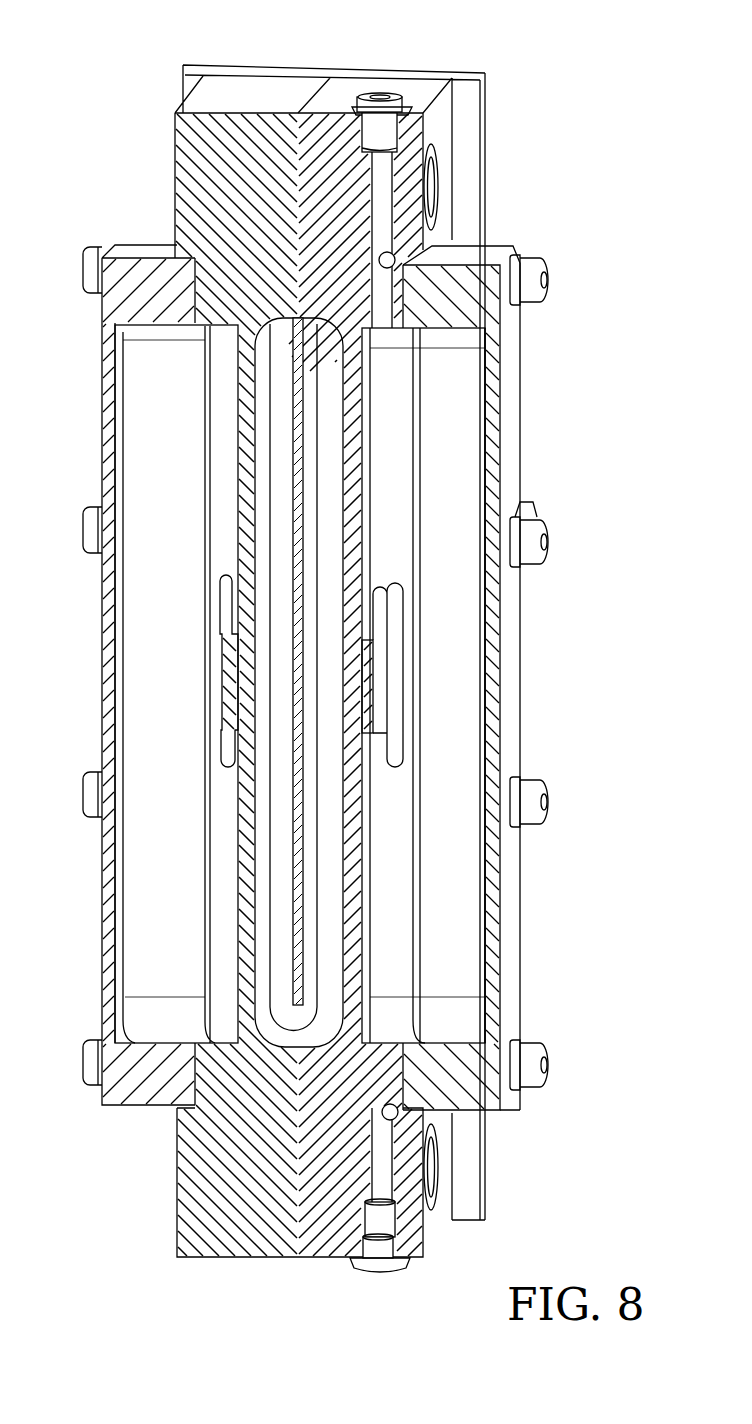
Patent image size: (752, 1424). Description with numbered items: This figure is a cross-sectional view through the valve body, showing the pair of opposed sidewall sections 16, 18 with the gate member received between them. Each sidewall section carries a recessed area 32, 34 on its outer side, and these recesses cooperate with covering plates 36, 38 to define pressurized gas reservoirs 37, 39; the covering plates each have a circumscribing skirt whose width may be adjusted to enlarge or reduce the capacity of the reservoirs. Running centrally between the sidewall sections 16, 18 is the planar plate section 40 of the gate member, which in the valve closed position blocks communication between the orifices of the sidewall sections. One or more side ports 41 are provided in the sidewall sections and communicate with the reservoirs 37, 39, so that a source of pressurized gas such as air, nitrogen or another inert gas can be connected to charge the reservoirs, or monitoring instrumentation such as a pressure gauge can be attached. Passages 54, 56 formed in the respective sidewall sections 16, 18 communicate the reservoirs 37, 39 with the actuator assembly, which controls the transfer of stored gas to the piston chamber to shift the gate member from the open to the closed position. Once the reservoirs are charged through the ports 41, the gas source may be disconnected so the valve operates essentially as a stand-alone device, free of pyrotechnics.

The sidewall section 16 is at (207, 1200).
The sidewall section 18 is at (417, 1222).
The recessed area 32 is at (223, 460).
The recessed area 34 is at (392, 430).
The covering plate 36 is at (108, 975).
The pressurized gas reservoir 37 is at (170, 850).
The covering plate 38 is at (505, 1002).
The pressurized gas reservoir 39 is at (447, 884).
The planar plate section 40 is at (308, 598).
The side port 41 is at (390, 98).
The passage 54 is at (231, 598).
The passage 56 is at (397, 635).